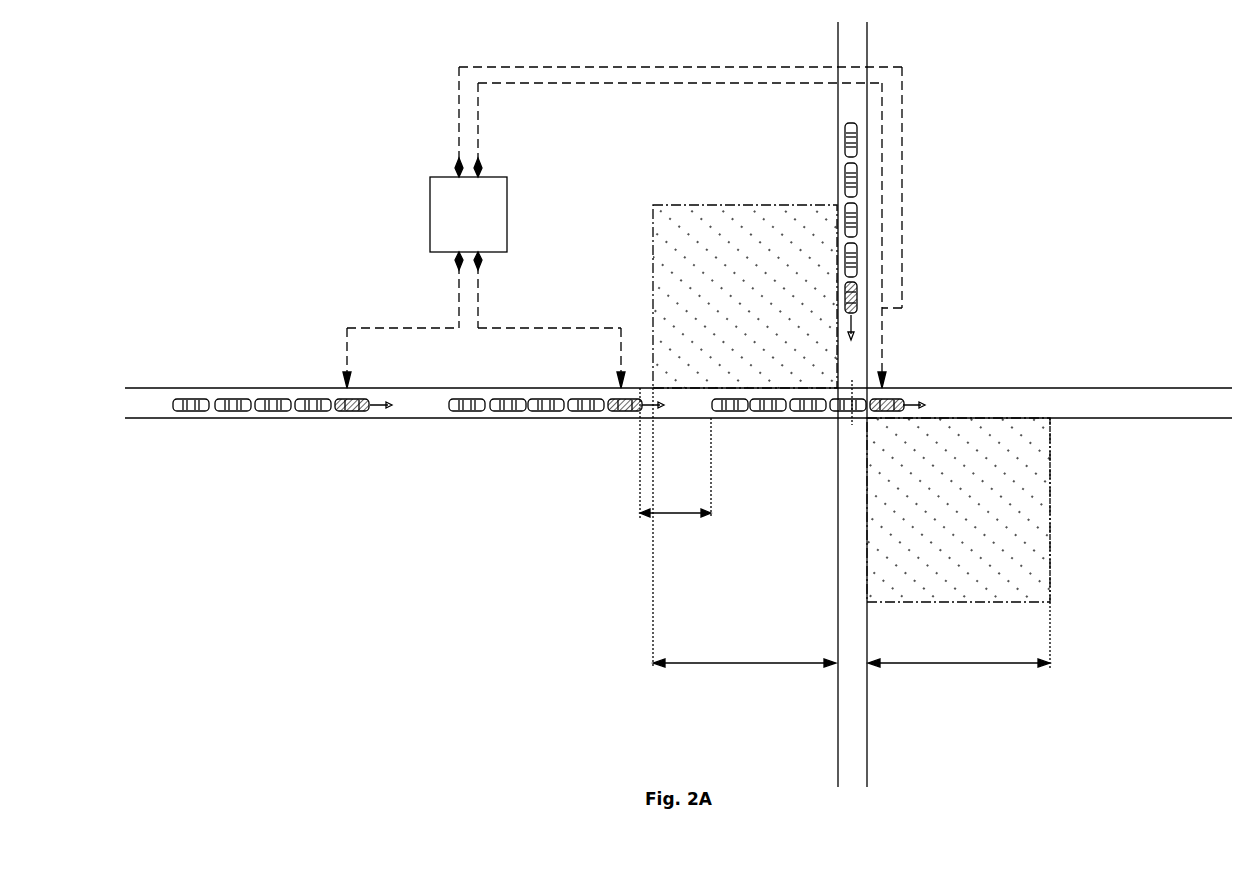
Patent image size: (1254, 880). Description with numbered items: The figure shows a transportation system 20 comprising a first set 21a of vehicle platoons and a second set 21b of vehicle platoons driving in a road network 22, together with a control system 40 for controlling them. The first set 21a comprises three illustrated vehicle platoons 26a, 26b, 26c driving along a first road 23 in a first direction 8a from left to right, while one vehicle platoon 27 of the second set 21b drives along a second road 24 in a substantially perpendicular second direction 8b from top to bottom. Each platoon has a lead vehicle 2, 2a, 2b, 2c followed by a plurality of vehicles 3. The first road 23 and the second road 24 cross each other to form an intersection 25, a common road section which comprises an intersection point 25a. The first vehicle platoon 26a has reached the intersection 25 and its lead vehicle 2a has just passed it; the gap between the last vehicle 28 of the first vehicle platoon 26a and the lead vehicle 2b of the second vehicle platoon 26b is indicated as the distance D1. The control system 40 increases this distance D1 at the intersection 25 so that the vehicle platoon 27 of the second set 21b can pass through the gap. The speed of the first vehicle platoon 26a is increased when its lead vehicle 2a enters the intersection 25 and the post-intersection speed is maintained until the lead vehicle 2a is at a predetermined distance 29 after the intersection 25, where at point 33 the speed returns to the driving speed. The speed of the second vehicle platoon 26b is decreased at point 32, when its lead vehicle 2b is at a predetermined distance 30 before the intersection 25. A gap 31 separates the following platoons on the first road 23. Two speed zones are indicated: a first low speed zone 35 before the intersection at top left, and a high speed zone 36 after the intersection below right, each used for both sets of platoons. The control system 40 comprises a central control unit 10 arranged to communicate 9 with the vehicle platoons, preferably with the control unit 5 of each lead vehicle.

The lead vehicle 2 is at (870, 298).
The lead vehicle of the first vehicle platoon 2a is at (905, 397).
The lead vehicle of the second vehicle platoon 2b is at (620, 412).
The lead vehicle of the third vehicle platoon 2c is at (343, 412).
The vehicles 3 is at (228, 412).
The control unit 5 is at (336, 398).
The first direction 8a is at (380, 414).
The second direction 8b is at (856, 325).
The communication 9 is at (622, 66).
The central control unit 10 is at (430, 215).
The transportation system 20 is at (402, 135).
The first set of vehicle platoons 21a is at (488, 470).
The second set of vehicle platoons 21b is at (925, 165).
The road network 22 is at (925, 263).
The first road 23 is at (370, 414).
The second road 24 is at (858, 200).
The intersection 25 is at (832, 386).
The intersection point 25a is at (853, 397).
The first vehicle platoon 26a is at (795, 425).
The second vehicle platoon 26b is at (556, 470).
The third vehicle platoon 26c is at (282, 470).
The vehicle platoon of the second set 27 is at (790, 172).
The last vehicle 28 is at (712, 405).
The predetermined distance after the intersection 29 is at (946, 665).
The predetermined distance before the intersection 30 is at (732, 665).
The gap 31 is at (422, 398).
The point 32 is at (650, 386).
The point 33 is at (1052, 420).
The first low speed zone 35 is at (652, 298).
The high speed zone 36 is at (1052, 512).
The control system 40 is at (372, 162).
The distance D1 is at (676, 516).